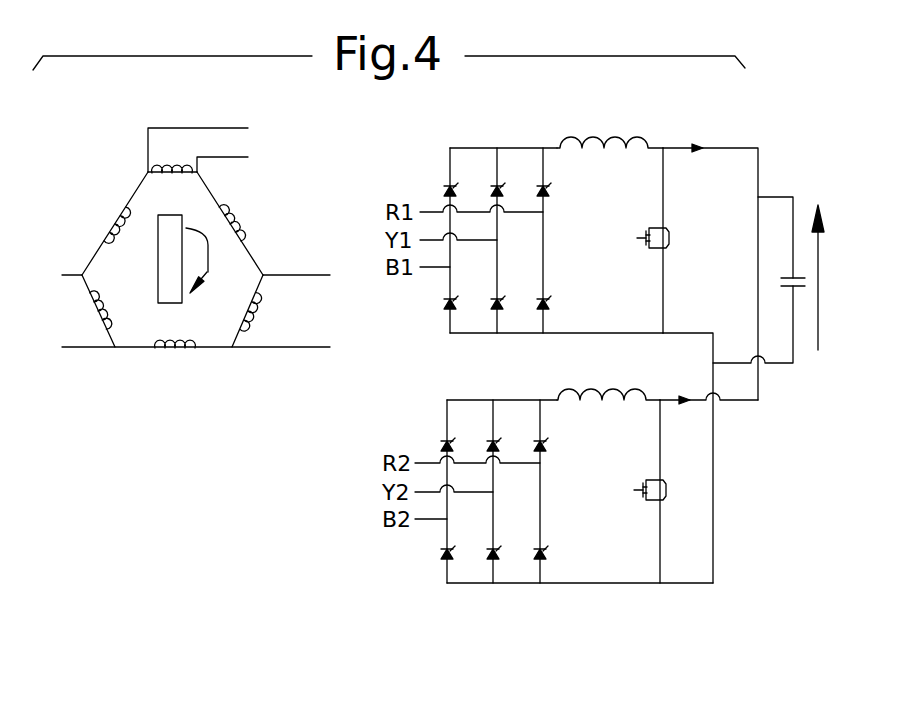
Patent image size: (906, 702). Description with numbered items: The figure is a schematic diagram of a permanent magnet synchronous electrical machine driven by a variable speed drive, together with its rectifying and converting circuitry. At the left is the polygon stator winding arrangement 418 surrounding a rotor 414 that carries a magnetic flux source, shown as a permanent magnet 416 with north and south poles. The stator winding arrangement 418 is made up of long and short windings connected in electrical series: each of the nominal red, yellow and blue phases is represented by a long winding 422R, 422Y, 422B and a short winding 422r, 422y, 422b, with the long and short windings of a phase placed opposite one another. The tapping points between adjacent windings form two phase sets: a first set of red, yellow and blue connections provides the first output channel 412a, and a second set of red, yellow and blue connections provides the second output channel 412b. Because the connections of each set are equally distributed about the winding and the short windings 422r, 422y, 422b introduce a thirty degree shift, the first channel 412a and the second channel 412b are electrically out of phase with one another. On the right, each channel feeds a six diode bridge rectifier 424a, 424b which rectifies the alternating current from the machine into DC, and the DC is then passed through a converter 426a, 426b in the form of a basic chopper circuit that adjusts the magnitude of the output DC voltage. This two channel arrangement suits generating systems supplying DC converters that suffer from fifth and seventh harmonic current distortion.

The first output channel 412a is at (418, 193).
The second output channel 412b is at (427, 537).
The rotor 414 is at (155, 298).
The permanent magnet rotor 416 is at (163, 210).
The stator winding arrangement 418 is at (85, 380).
The short red winding 422r is at (173, 167).
The long red winding 422R is at (168, 352).
The long yellow winding 422Y is at (105, 233).
The short yellow winding 422y is at (255, 306).
The long blue winding 422B is at (242, 215).
The short blue winding 422b is at (90, 301).
The first six diode bridge rectifier 424a is at (560, 131).
The second six diode bridge rectifier 424b is at (511, 605).
The first converter 426a is at (678, 209).
The second converter 426b is at (690, 487).